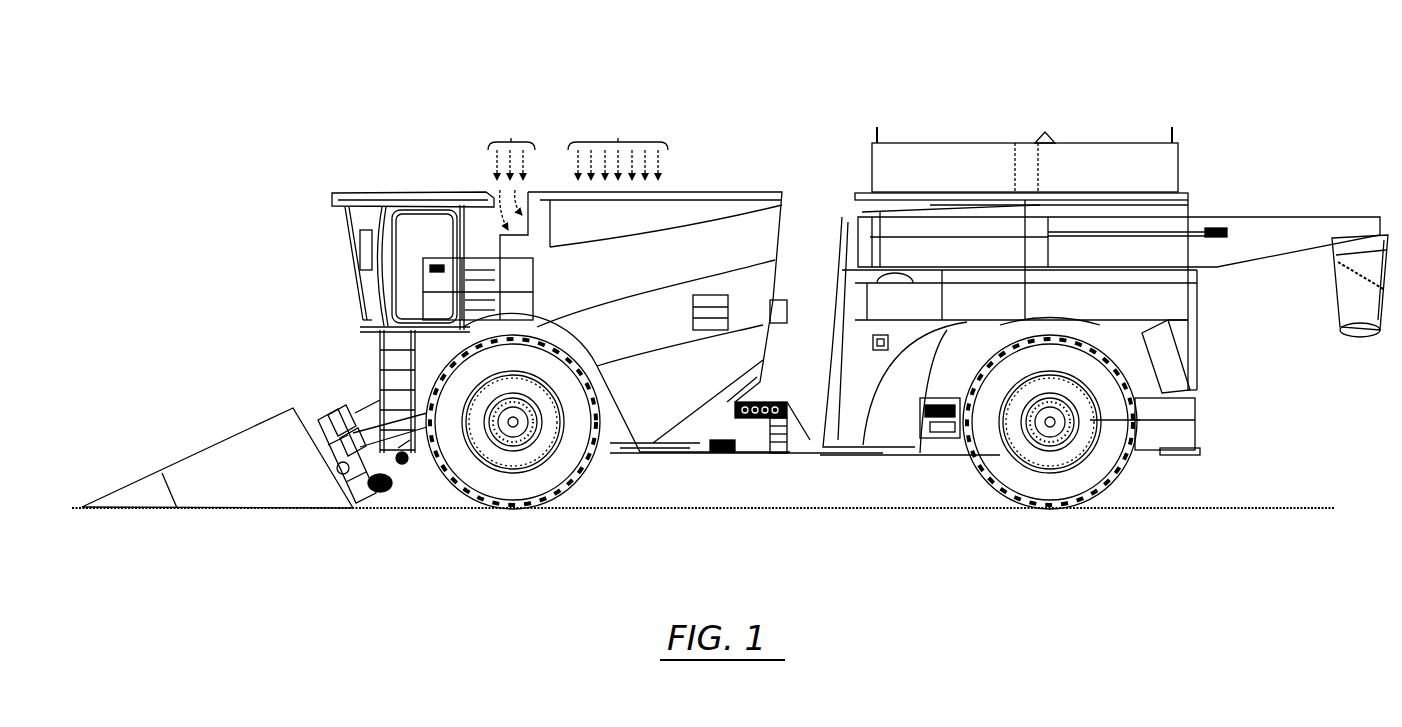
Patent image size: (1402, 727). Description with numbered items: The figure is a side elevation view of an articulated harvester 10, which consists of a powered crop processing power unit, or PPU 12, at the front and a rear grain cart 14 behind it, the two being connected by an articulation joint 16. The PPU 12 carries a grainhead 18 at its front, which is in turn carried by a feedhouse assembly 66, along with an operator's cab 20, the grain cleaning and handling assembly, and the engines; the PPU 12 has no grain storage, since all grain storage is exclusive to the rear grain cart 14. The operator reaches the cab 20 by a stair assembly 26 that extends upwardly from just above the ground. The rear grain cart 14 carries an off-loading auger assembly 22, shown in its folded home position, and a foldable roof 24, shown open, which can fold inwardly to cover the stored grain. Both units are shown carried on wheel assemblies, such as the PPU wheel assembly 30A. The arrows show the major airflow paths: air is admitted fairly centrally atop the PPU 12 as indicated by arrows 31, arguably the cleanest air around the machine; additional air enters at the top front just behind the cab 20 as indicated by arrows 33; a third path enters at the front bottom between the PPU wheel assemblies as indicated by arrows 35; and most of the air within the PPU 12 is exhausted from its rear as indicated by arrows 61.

The articulated harvester 10 is at (725, 82).
The powered PPU 12 is at (345, 115).
The rear grain cart 14 is at (1225, 152).
The articulation joint 16 is at (700, 466).
The grainhead 18 is at (250, 437).
The operator's cab 20 is at (430, 190).
The off-loading auger assembly 22 is at (1267, 230).
The foldable roof 24 is at (940, 160).
The stair assembly 26 is at (378, 368).
The PPU wheel assembly 30A is at (508, 487).
The arrows 31 is at (618, 147).
The arrows 33 is at (511, 147).
The arrows 35 is at (438, 480).
The arrows 61 is at (893, 468).
The feedhouse assembly 66 is at (350, 410).